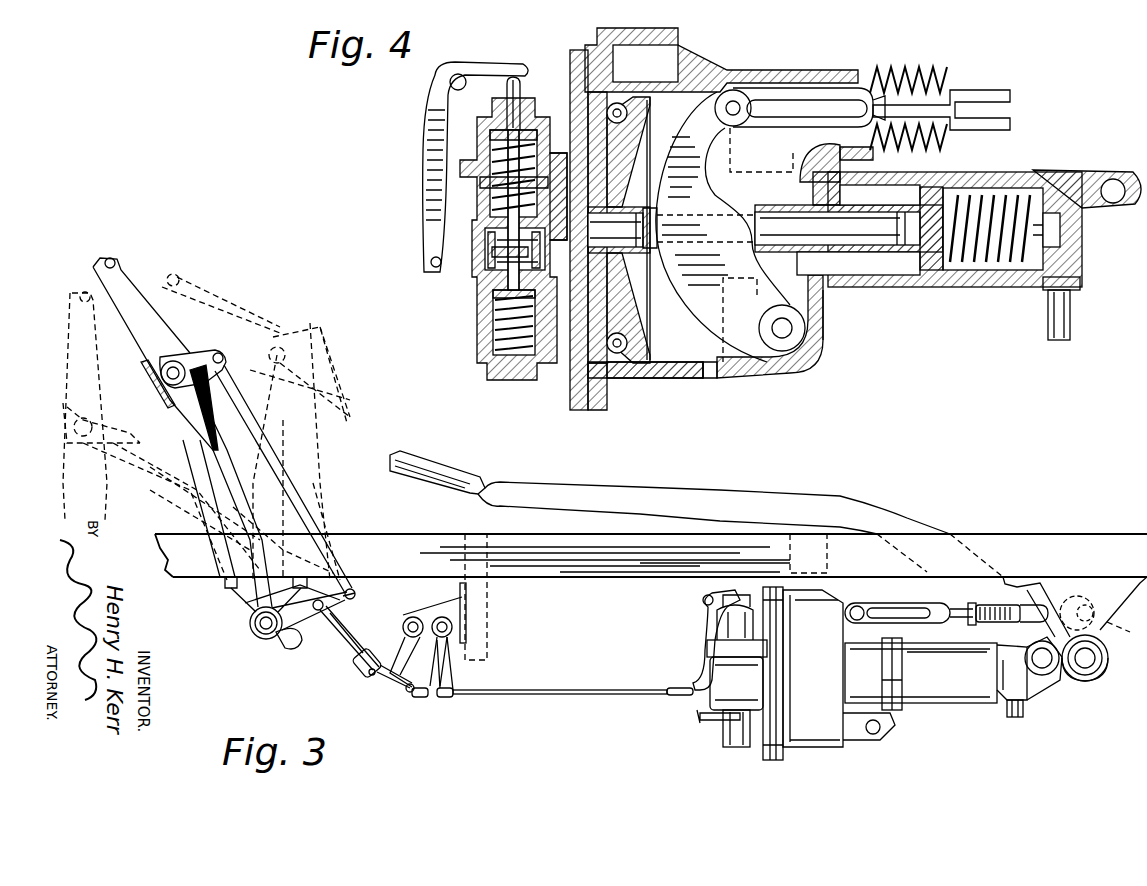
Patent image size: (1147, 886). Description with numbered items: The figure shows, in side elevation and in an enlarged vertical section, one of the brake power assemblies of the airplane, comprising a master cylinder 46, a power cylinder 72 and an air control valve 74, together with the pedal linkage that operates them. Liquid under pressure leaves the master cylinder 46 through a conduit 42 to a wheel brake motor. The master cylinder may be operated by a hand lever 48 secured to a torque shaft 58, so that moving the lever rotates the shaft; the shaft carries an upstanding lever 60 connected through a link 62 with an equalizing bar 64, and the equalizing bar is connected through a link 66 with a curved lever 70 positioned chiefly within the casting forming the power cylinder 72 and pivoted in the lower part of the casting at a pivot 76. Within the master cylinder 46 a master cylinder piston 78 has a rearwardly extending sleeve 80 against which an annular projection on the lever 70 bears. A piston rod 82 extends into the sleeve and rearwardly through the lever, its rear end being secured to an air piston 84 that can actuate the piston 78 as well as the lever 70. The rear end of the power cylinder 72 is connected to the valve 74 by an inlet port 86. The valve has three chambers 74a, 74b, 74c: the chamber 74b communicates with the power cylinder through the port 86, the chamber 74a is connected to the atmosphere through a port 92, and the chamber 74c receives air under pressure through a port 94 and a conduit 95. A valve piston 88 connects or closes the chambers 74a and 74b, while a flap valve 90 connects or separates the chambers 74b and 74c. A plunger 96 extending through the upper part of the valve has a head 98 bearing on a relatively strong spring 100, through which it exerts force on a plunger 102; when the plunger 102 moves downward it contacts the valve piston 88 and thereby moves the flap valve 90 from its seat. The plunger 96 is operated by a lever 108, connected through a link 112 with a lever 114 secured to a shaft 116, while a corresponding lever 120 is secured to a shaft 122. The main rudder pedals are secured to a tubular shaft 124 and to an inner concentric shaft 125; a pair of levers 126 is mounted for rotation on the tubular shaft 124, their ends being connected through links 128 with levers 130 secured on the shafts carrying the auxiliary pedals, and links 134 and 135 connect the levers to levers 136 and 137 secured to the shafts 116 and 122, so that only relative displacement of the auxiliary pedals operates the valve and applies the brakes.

In FIG. 4, the conduit 42 is at (1071, 318).
In FIG. 4, the master cylinder 46 is at (870, 290).
In FIG. 3, the master cylinder 46 is at (948, 690).
In FIG. 3, the hand lever 48 is at (513, 494).
In FIG. 3, the torque shaft 58 is at (1085, 668).
In FIG. 3, the upstanding lever 60 is at (1141, 642).
In FIG. 3, the link 62 is at (1040, 610).
In FIG. 3, the equalizing bar 64 is at (988, 610).
In FIG. 4, the link 66 is at (927, 110).
In FIG. 3, the link 66 is at (943, 606).
In FIG. 4, the lever 70 is at (710, 95).
In FIG. 4, the power cylinder 72 is at (648, 380).
In FIG. 3, the power cylinder 72 is at (827, 737).
In FIG. 4, the valve 74 is at (462, 267).
In FIG. 3, the valve 74 is at (727, 688).
In FIG. 4, the chamber 74a is at (534, 130).
In FIG. 4, the chamber 74b is at (492, 252).
In FIG. 4, the chamber 74c is at (497, 320).
In FIG. 4, the pivot 76 is at (782, 338).
In FIG. 4, the master cylinder piston 78 is at (923, 272).
In FIG. 4, the sleeve 80 is at (823, 297).
In FIG. 4, the piston rod 82 is at (875, 248).
In FIG. 4, the air piston 84 is at (612, 380).
In FIG. 4, the inlet port 86 is at (557, 268).
In FIG. 4, the valve piston 88 is at (490, 250).
In FIG. 4, the flap valve 90 is at (493, 297).
In FIG. 4, the port 92 is at (571, 135).
In FIG. 3, the port 94 is at (723, 733).
In FIG. 3, the conduit 95 is at (710, 718).
In FIG. 4, the plunger 96 is at (513, 76).
In FIG. 4, the head 98 is at (488, 133).
In FIG. 4, the spring 100 is at (498, 147).
In FIG. 4, the plunger 102 is at (483, 200).
In FIG. 4, the lever 108 is at (436, 110).
In FIG. 3, the lever 108 is at (693, 638).
In FIG. 3, the link 112 is at (583, 694).
In FIG. 3, the lever 114 is at (443, 667).
In FIG. 3, the shaft 116 is at (453, 613).
In FIG. 3, the lever 120 is at (408, 690).
In FIG. 3, the shaft 122 is at (420, 617).
In FIG. 3, the tubular shaft 124 is at (260, 631).
In FIG. 3, the inner concentric shaft 125 is at (270, 640).
In FIG. 3, the levers 126 is at (307, 610).
In FIG. 3, the links 128 is at (312, 513).
In FIG. 3, the levers 130 is at (205, 355).
In FIG. 3, the link 134 is at (350, 657).
In FIG. 3, the link 135 is at (350, 653).
In FIG. 3, the lever 136 is at (437, 695).
In FIG. 3, the lever 137 is at (390, 670).